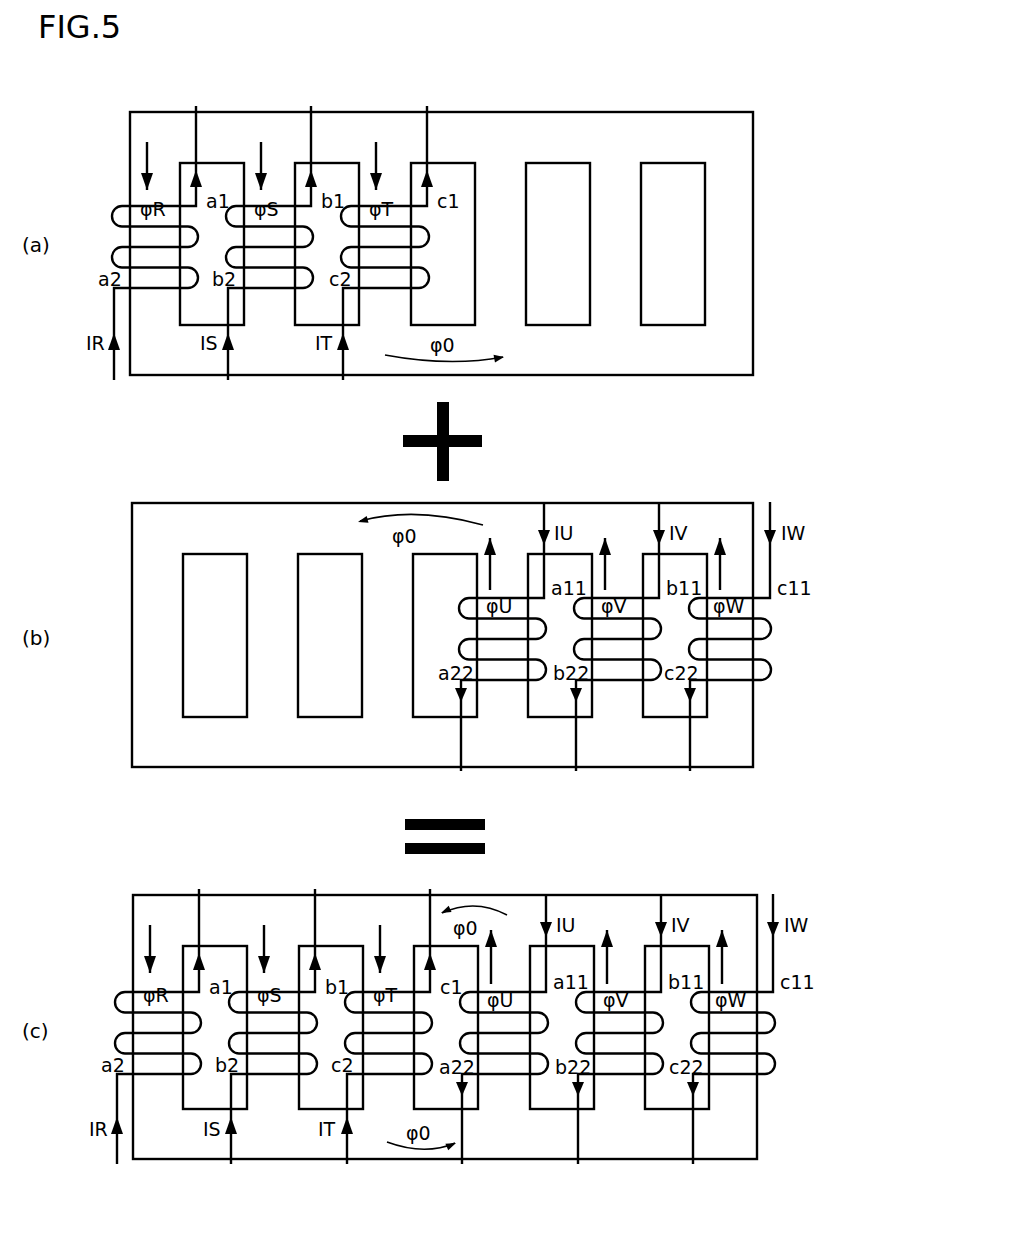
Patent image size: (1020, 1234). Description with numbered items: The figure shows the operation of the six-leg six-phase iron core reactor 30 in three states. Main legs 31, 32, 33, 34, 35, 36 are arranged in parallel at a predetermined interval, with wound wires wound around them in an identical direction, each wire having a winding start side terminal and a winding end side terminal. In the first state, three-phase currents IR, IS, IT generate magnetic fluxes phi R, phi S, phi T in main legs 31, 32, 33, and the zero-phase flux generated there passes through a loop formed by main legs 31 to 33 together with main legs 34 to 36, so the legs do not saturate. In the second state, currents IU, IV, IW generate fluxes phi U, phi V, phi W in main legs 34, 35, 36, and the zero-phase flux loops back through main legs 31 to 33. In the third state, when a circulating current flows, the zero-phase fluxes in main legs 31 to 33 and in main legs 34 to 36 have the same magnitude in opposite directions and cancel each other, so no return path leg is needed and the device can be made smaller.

The six-leg six-phase iron core reactor 30 is at (127, 110).
The main leg 31 is at (158, 298).
The main leg 32 is at (275, 298).
The main leg 33 is at (383, 298).
The main leg 34 is at (507, 298).
The main leg 35 is at (613, 298).
The main leg 36 is at (728, 298).